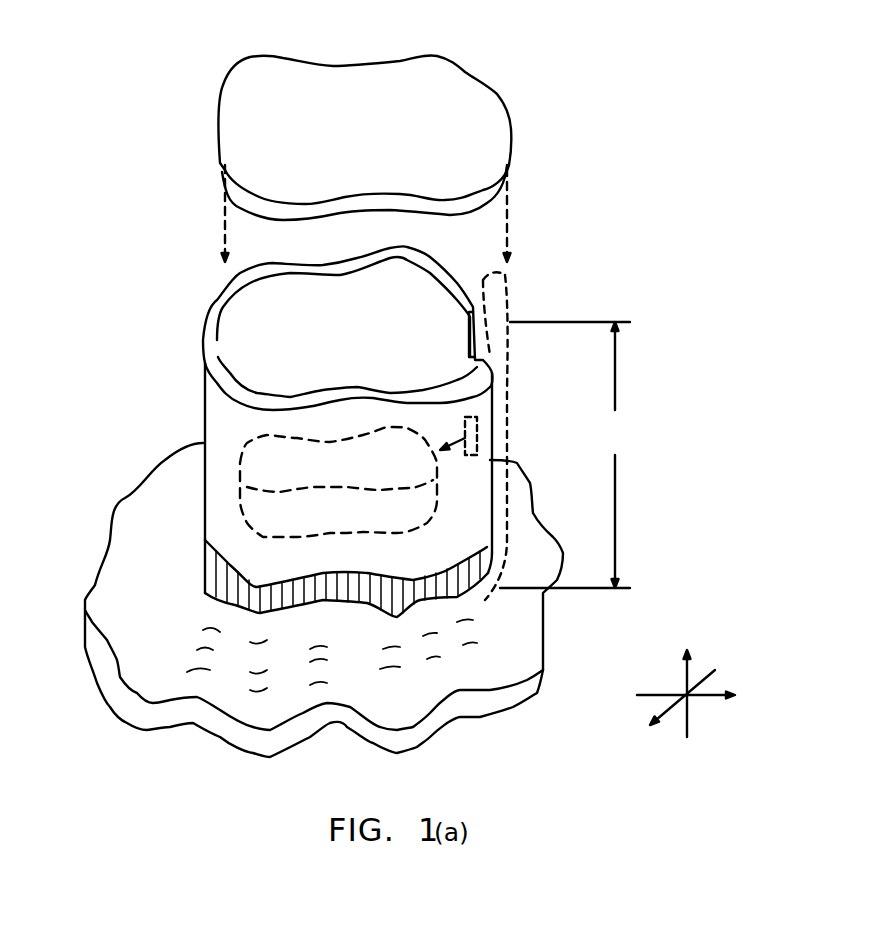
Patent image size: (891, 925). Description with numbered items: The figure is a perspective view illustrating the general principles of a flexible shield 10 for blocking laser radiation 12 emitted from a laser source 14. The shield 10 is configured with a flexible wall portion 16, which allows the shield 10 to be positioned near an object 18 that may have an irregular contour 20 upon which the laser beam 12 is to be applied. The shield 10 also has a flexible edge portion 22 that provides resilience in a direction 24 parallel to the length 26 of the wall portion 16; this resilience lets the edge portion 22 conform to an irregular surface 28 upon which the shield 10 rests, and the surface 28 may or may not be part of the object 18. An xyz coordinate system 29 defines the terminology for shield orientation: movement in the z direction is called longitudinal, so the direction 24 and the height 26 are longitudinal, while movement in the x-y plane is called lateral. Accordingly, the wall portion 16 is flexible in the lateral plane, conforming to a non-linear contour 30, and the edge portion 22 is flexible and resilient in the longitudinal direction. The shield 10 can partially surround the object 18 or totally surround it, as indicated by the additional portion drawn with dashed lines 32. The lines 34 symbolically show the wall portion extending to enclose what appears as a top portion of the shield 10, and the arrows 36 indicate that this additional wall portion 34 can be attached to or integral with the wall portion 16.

The flexible shield 10 is at (104, 87).
The laser radiation 12 is at (460, 452).
The laser source 14 is at (483, 423).
The flexible wall portion 16 is at (203, 422).
The object 18 is at (240, 515).
The irregular contour 20 is at (328, 490).
The flexible edge portion 22 is at (460, 597).
The direction 24 is at (413, 588).
The length 26 is at (570, 455).
The irregular surface 28 is at (375, 688).
The xyz coordinate system 29 is at (787, 707).
The non-linear contour 30 is at (197, 378).
The dashed lines 32 is at (515, 287).
The additional wall portion 34 is at (500, 82).
The arrows 36 is at (212, 222).